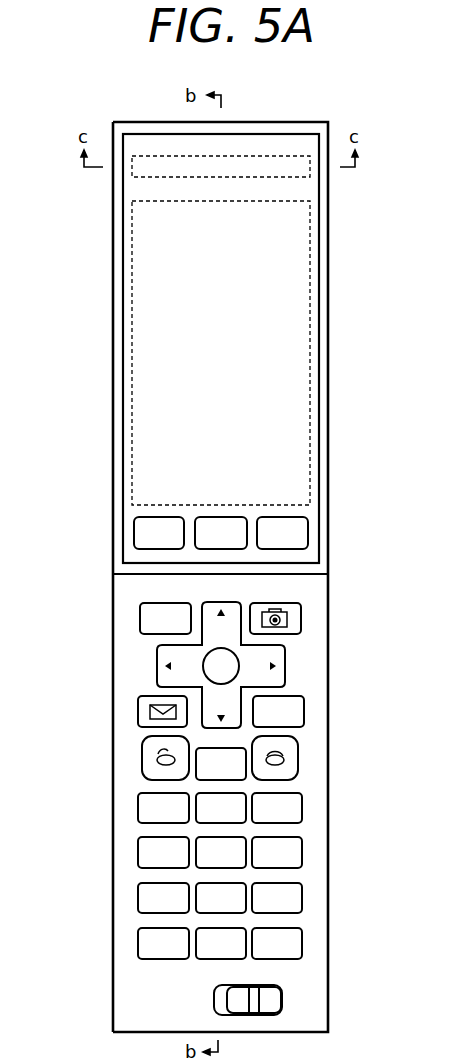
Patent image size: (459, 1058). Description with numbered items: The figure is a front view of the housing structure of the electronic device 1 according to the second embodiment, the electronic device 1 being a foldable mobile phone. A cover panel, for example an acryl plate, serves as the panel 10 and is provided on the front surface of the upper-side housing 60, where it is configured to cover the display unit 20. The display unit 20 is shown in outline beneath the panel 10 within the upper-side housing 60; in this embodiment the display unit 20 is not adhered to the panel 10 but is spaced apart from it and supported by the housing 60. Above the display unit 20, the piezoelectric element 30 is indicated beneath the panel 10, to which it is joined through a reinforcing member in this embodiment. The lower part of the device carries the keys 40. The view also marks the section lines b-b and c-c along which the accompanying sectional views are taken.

The electronic device 1 is at (181, 116).
The panel 10 is at (242, 133).
The display unit 20 is at (313, 290).
The piezoelectric element 30 is at (310, 177).
The operation keys 40 is at (290, 533).
The upper-side housing 60 is at (113, 260).